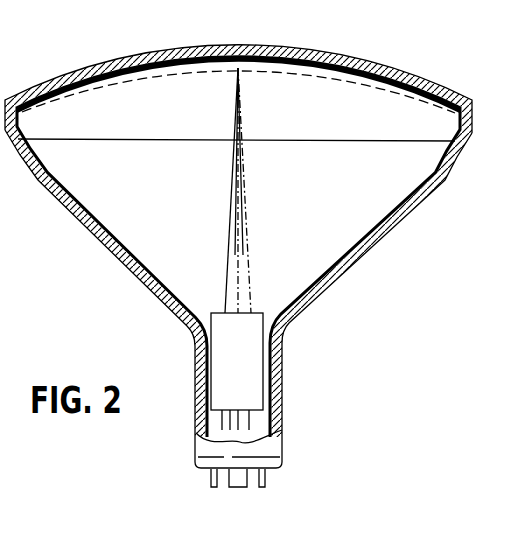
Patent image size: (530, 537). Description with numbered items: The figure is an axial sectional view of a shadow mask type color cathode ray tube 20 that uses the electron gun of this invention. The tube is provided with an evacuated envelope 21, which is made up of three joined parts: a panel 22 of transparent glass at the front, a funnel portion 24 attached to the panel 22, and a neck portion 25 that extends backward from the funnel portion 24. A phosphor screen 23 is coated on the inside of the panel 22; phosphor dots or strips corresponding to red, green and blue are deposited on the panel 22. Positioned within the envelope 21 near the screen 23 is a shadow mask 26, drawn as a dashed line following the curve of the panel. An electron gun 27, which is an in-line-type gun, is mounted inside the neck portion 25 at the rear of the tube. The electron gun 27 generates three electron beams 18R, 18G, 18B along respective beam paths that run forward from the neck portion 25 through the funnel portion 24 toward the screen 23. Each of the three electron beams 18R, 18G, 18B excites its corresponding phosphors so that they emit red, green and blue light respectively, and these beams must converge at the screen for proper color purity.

The color cathode ray tube 20 is at (265, 268).
The evacuated envelope 21 is at (112, 223).
The panel 22 is at (147, 50).
The phosphor screen 23 is at (180, 50).
The funnel portion 24 is at (343, 274).
The neck portion 25 is at (281, 371).
The shadow mask 26 is at (196, 78).
The electron gun 27 is at (237, 385).
The electron beam 18R is at (245, 178).
The electron beam 18G is at (238, 248).
The electron beam 18B is at (228, 232).